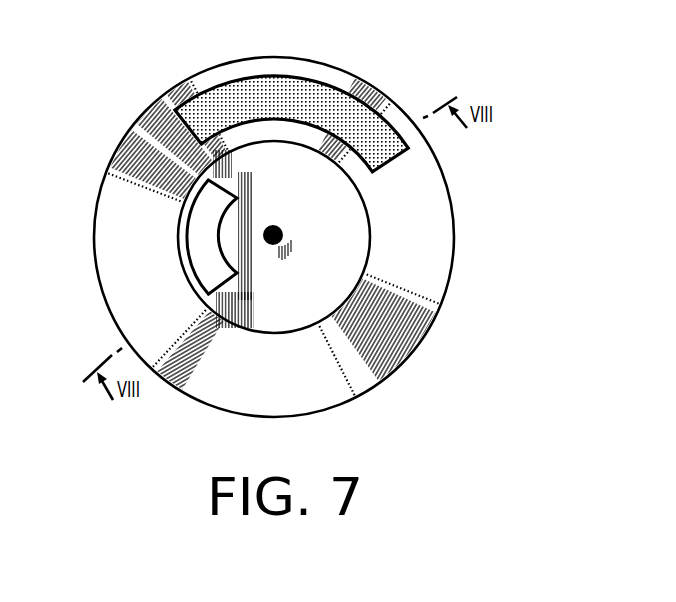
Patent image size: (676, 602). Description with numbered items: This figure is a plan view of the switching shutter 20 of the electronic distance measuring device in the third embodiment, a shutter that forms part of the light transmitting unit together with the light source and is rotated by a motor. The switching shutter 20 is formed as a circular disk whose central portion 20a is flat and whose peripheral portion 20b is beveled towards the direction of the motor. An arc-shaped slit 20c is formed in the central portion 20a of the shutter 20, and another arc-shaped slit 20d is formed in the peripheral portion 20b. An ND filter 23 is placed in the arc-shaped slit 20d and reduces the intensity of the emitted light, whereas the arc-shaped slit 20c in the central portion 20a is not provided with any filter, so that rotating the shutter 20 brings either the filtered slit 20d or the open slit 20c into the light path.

The switching shutter 20 is at (451, 191).
The central portion 20a is at (361, 256).
The peripheral portion 20b is at (107, 270).
The arc-shaped slit 20c is at (199, 266).
The arc-shaped slit 20d is at (349, 97).
The ND filter 23 is at (268, 76).